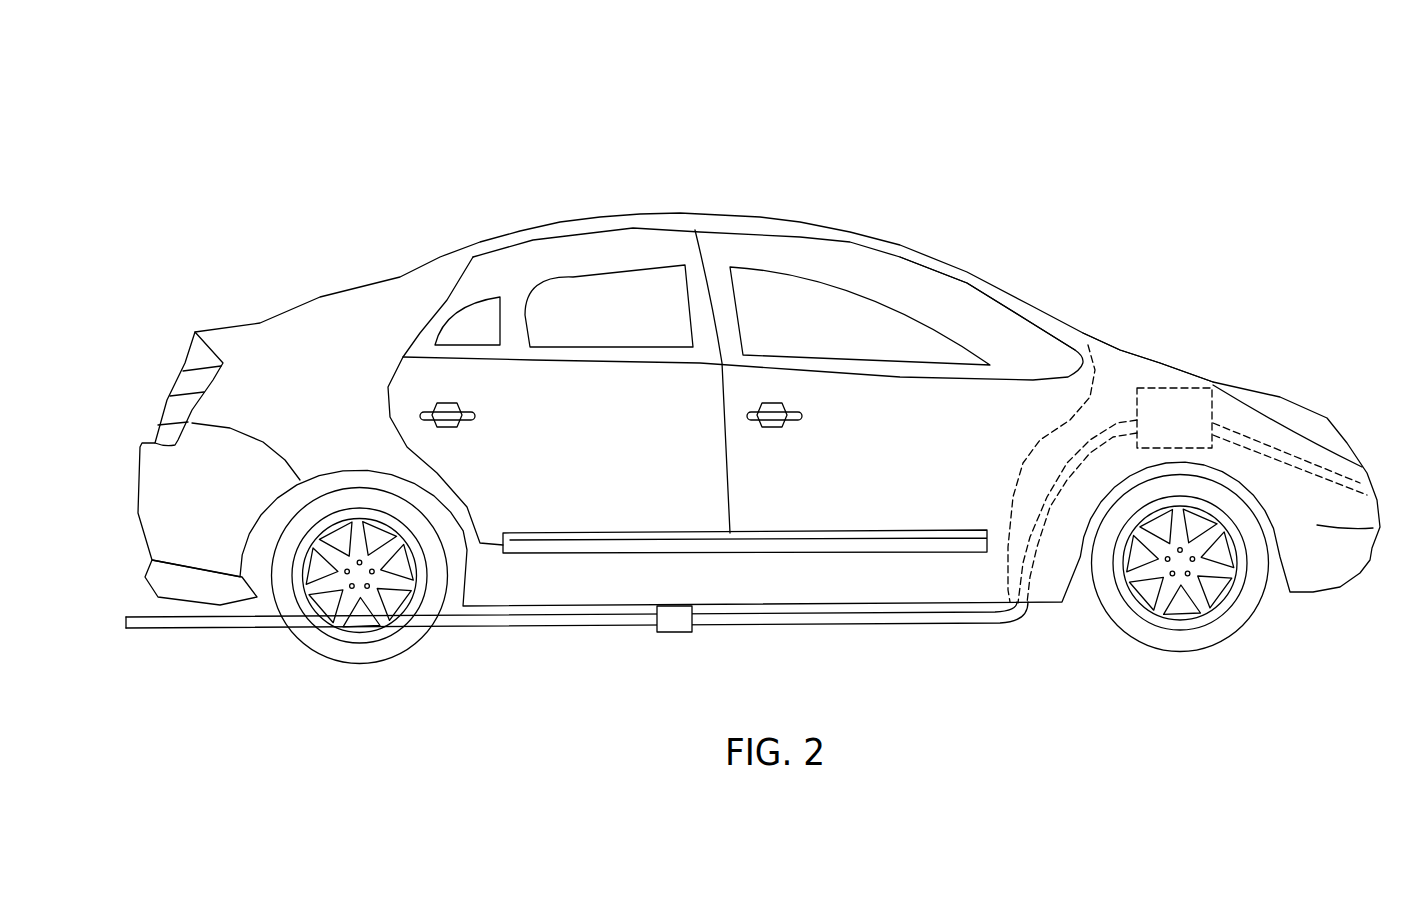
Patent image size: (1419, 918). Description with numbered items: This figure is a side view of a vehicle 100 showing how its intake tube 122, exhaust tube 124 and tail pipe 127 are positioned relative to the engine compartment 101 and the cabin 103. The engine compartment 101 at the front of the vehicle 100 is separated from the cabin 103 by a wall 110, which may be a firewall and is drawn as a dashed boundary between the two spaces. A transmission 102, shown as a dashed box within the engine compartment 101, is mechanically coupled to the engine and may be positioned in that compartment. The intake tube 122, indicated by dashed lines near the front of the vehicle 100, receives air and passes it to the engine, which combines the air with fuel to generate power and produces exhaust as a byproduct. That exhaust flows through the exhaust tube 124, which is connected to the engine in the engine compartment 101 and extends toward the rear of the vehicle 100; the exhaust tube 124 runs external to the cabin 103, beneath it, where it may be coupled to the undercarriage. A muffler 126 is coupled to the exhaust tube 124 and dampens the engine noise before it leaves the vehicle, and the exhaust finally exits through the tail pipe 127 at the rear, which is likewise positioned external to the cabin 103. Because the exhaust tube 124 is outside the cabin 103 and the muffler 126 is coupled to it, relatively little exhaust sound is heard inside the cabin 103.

The vehicle 100 is at (860, 109).
The engine compartment 101 is at (1118, 362).
The transmission 102 is at (1187, 388).
The cabin 103 is at (977, 307).
The wall 110 is at (1022, 462).
The intake tube 122 is at (1362, 480).
The exhaust tube 124 is at (933, 627).
The muffler 126 is at (677, 633).
The tail pipe 127 is at (142, 630).